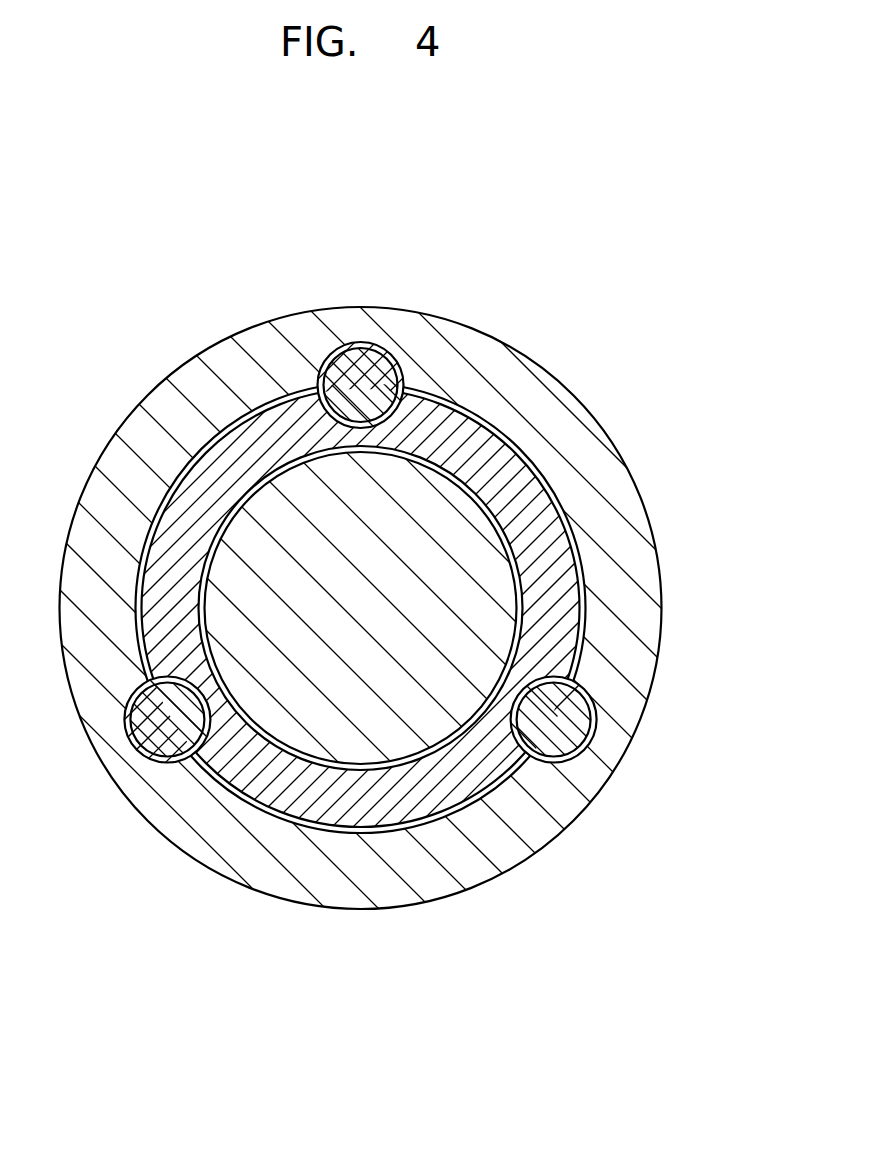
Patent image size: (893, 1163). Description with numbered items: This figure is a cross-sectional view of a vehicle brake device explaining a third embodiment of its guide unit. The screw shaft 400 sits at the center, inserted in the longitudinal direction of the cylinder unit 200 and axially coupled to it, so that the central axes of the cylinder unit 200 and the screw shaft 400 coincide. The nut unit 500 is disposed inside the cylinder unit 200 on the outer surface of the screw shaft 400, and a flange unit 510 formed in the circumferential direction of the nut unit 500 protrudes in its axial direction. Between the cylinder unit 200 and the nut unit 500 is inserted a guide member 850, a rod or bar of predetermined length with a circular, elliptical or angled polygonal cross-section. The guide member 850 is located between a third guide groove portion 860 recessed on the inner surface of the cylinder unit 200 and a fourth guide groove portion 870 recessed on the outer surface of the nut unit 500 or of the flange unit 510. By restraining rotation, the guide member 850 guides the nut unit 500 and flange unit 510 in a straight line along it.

The cylinder unit 200 is at (555, 378).
The screw shaft 400 is at (307, 547).
The nut unit 500 is at (446, 614).
The flange unit 510 is at (283, 790).
The guide member 850 is at (557, 717).
The third guide groove portion 860 is at (592, 718).
The fourth guide groove portion 870 is at (430, 600).